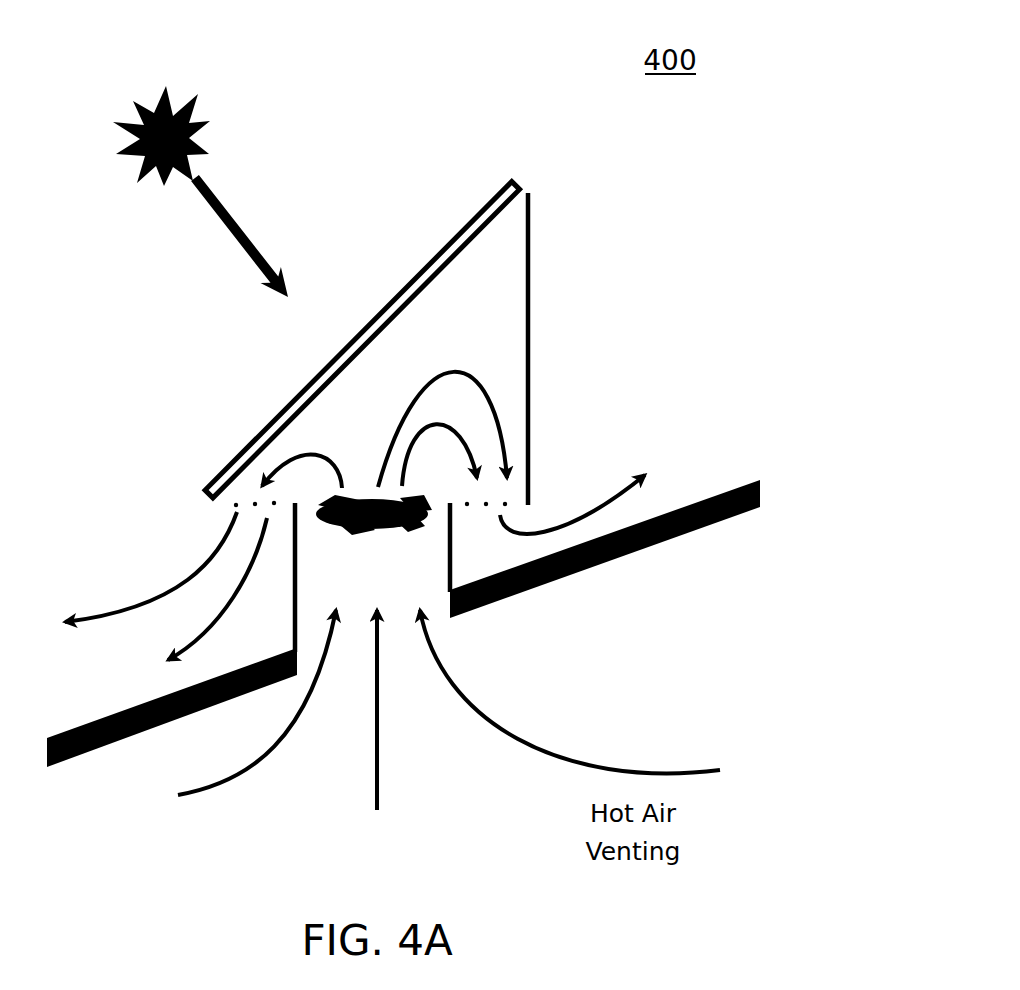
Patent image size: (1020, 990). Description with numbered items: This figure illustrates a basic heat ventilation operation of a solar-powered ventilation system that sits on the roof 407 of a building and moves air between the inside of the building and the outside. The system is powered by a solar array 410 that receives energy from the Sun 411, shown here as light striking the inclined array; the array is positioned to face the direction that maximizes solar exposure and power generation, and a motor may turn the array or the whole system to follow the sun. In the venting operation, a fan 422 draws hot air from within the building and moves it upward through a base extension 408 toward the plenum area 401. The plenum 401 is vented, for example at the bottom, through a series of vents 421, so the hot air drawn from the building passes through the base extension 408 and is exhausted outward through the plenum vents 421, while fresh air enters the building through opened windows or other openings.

The plenum area 401 is at (530, 340).
The roof 407 is at (743, 486).
The base extension 408 is at (452, 575).
The solar array 410 is at (515, 178).
The Sun 411 is at (175, 96).
The vents 421 is at (233, 505).
The fan 422 is at (405, 531).